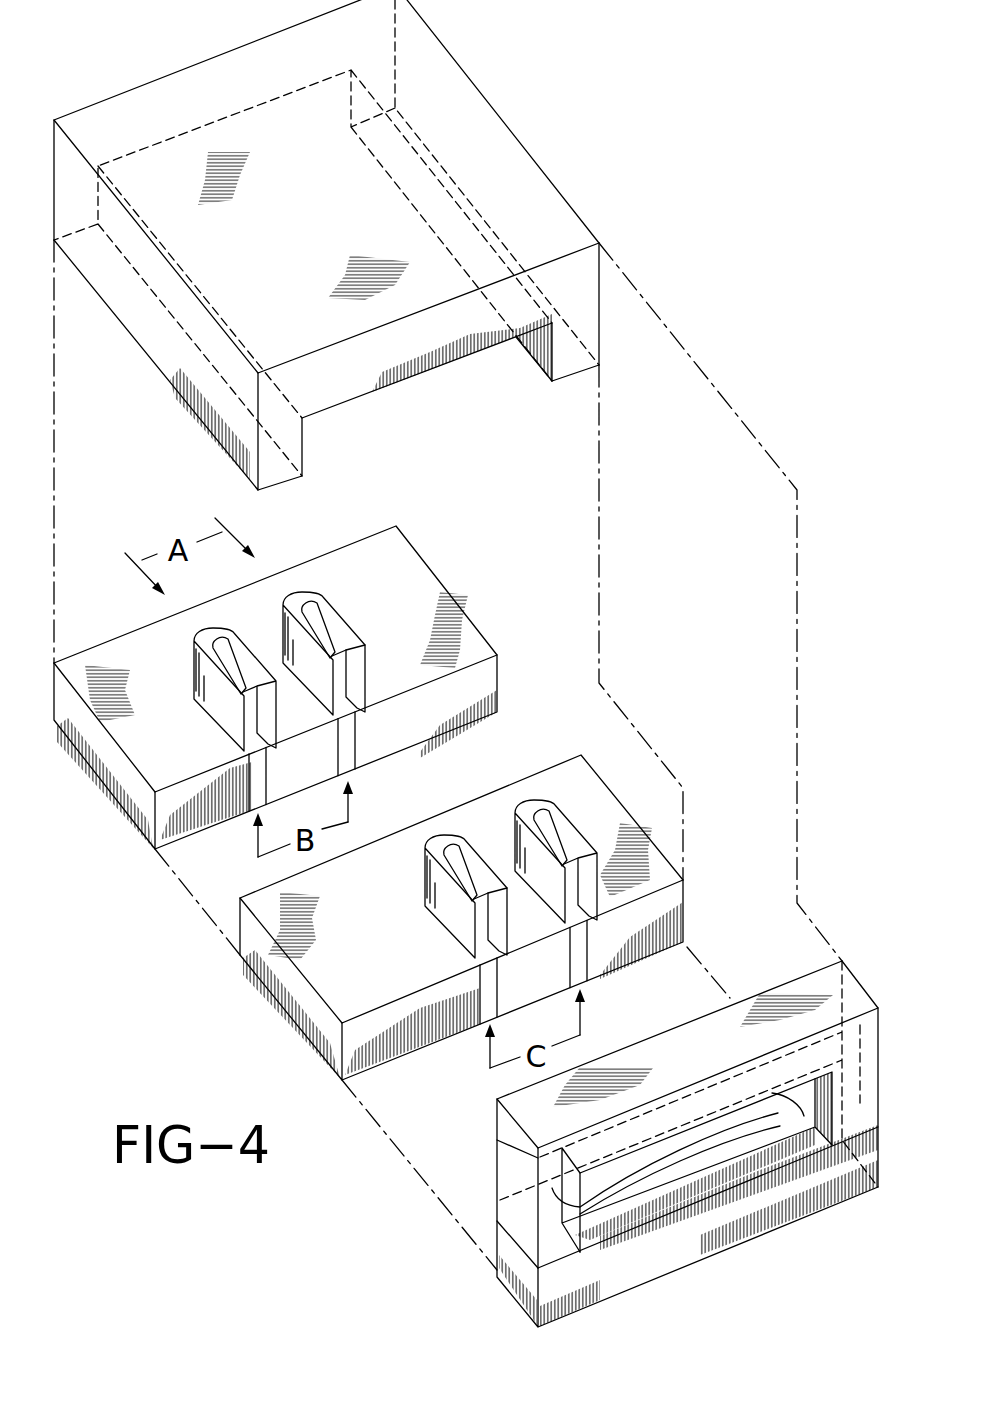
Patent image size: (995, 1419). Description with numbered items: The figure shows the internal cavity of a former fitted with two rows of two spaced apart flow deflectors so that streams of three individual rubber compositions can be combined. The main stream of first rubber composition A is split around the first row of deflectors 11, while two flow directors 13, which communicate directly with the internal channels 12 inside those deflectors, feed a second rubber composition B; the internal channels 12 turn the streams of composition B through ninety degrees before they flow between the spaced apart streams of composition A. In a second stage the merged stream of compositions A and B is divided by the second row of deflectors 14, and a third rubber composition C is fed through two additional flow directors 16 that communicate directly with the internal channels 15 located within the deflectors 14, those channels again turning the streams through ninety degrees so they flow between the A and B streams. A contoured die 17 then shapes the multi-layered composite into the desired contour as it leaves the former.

The first row of deflectors 11 is at (344, 612).
The internal channels 12 is at (343, 674).
The flow directors 13 is at (353, 733).
The second row of deflectors 14 is at (437, 860).
The internal channels 15 is at (480, 925).
The flow directors 16 is at (490, 985).
The contoured die 17 is at (548, 1203).